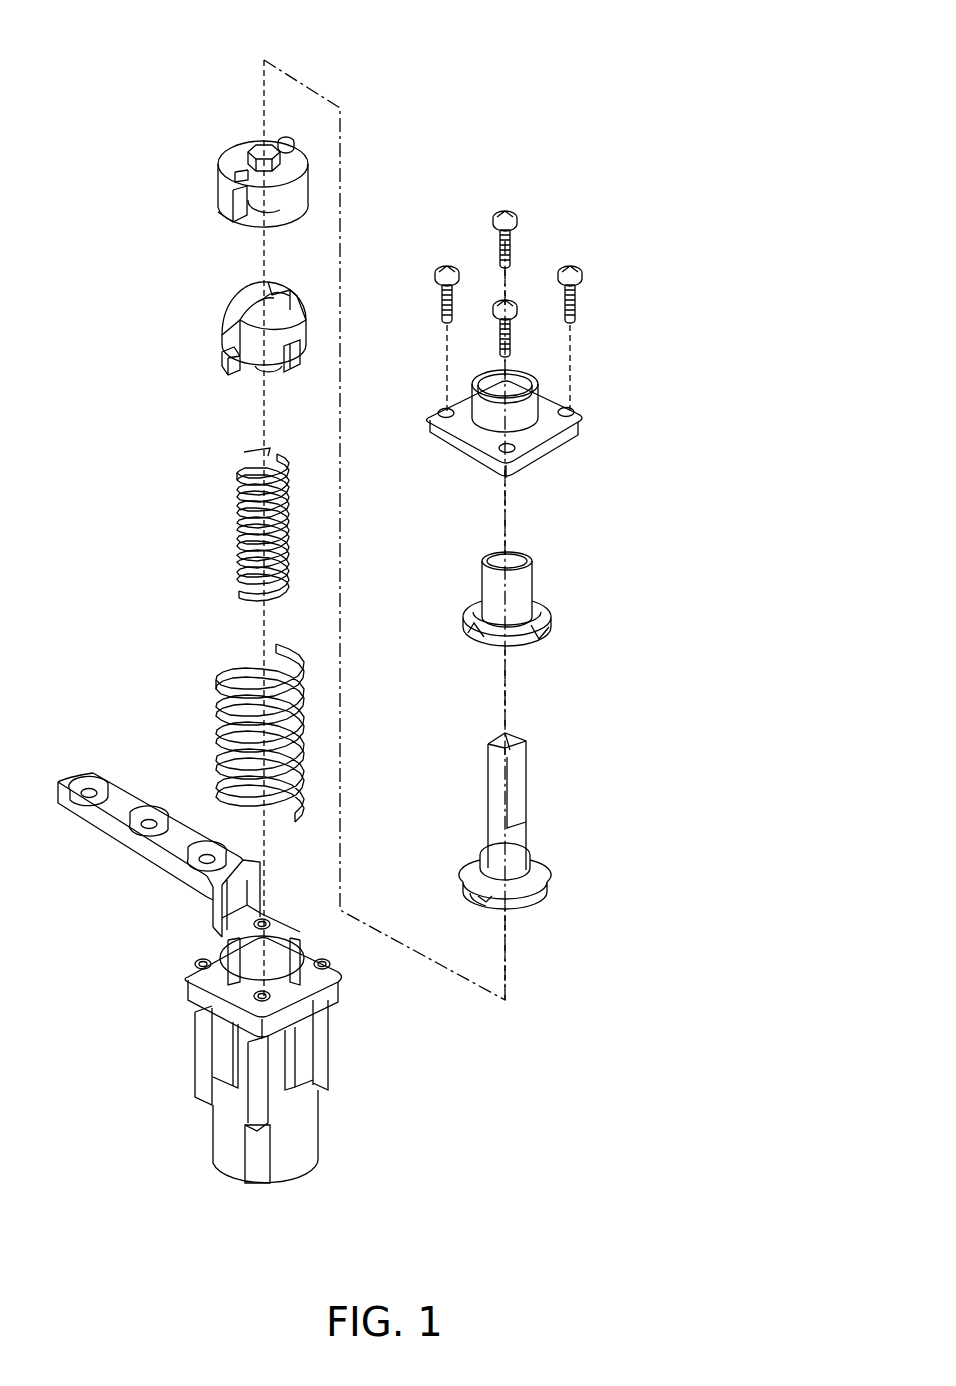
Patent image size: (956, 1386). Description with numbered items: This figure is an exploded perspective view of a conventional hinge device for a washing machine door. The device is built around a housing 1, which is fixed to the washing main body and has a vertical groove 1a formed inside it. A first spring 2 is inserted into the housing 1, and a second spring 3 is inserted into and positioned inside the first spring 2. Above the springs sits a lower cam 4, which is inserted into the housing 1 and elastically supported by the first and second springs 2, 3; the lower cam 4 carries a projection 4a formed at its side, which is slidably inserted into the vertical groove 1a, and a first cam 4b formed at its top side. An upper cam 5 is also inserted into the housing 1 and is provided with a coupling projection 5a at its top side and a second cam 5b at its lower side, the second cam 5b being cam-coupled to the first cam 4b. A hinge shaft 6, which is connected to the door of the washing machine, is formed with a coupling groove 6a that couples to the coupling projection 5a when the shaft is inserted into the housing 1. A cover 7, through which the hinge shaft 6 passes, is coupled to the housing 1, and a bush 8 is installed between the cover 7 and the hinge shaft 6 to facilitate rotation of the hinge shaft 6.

The housing 1 is at (323, 1128).
The vertical groove 1a is at (330, 938).
The first spring 2 is at (213, 717).
The second spring 3 is at (221, 529).
The lower cam 4 is at (212, 325).
The projection 4a is at (222, 356).
The first cam 4b is at (252, 296).
The upper cam 5 is at (212, 172).
The coupling projection 5a is at (232, 160).
The second cam 5b is at (232, 198).
The hinge shaft 6 is at (542, 829).
The coupling groove 6a is at (488, 905).
The cover 7 is at (594, 436).
The bush 8 is at (544, 583).